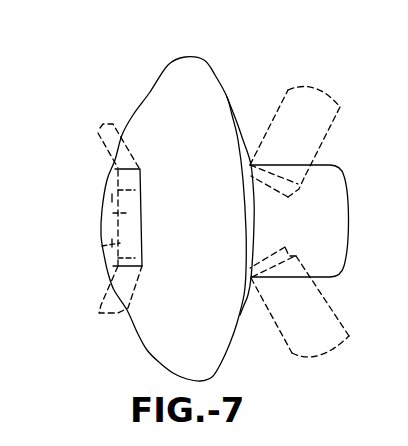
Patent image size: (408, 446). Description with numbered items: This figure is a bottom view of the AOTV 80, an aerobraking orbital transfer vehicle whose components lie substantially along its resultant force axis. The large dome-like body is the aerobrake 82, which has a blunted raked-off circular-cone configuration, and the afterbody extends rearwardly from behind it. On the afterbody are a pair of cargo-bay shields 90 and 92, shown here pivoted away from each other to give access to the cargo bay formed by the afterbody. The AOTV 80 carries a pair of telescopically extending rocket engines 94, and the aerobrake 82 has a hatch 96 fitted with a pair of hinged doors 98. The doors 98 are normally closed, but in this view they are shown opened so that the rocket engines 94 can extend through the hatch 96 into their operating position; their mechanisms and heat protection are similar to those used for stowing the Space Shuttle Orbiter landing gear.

The AOTV 80 is at (345, 68).
The aerobrake 82 is at (173, 78).
The cargo-bay shield 90 is at (284, 97).
The cargo-bay shield 92 is at (333, 317).
The rocket engines 94 is at (116, 198).
The hatch 96 is at (138, 221).
The hinged doors 98 is at (103, 123).